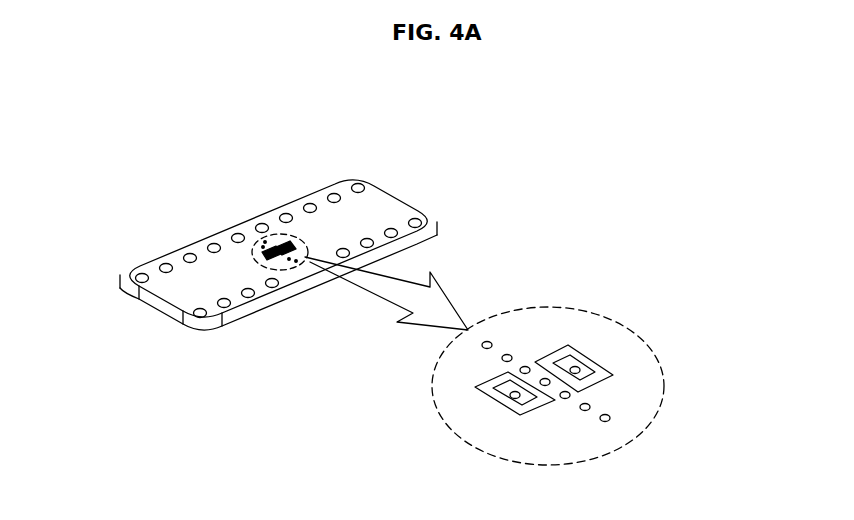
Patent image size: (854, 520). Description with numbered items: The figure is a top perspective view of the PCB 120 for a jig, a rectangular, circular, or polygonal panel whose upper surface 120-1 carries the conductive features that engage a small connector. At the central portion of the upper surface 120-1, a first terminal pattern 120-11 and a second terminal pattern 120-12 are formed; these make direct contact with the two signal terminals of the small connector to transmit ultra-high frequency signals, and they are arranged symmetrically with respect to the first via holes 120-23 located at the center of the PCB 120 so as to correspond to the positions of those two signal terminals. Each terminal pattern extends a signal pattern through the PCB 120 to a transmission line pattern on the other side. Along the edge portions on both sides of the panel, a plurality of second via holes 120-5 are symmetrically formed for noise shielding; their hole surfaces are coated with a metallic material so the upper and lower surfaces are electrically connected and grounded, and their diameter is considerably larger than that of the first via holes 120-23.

The PCB for a jig 120 is at (203, 190).
The upper surface 120-1 is at (373, 222).
The second via holes 120-5 is at (286, 212).
The first terminal pattern 120-11 is at (492, 398).
The second terminal pattern 120-12 is at (588, 360).
The first via holes 120-23 is at (607, 415).